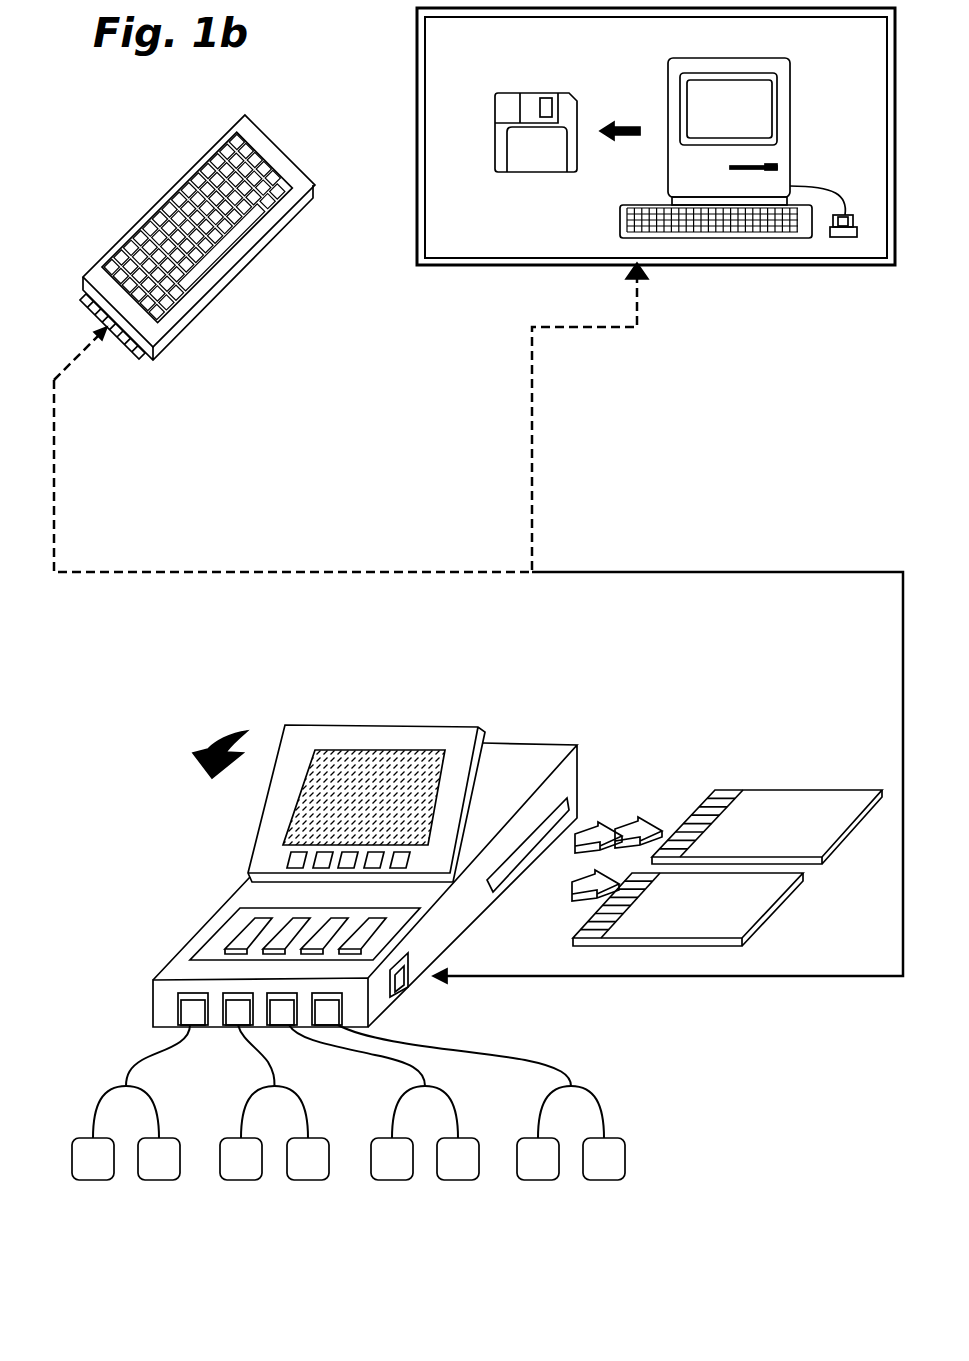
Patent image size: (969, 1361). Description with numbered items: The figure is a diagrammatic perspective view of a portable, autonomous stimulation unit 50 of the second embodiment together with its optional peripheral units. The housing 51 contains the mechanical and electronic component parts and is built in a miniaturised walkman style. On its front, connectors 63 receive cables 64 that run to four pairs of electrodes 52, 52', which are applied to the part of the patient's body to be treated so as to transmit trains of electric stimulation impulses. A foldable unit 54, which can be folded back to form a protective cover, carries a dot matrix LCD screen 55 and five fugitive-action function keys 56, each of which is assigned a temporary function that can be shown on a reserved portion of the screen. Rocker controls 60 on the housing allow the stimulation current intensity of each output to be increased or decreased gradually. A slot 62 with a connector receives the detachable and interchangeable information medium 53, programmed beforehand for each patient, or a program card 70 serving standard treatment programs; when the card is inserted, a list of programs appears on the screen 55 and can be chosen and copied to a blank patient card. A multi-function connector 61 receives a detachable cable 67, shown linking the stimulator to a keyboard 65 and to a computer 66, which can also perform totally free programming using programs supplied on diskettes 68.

The stimulation unit 50 is at (327, 906).
The housing 51 is at (442, 930).
The electrodes 52 is at (315, 1217).
The electrodes 52' is at (381, 1217).
The information medium 53 is at (787, 895).
The unit 54 is at (325, 785).
The dot matrix LCD screen 55 is at (325, 772).
The function keys 56 is at (293, 863).
The rocker controls 60 is at (292, 937).
The multi-function connector 61 is at (407, 978).
The slot 62 is at (517, 860).
The connectors 63 is at (234, 1016).
The cables 64 is at (150, 1052).
The keyboard 65 is at (310, 143).
The computer 66 is at (806, 139).
The cable 67 is at (737, 978).
The diskettes 68 is at (543, 153).
The program cards 70 is at (785, 790).